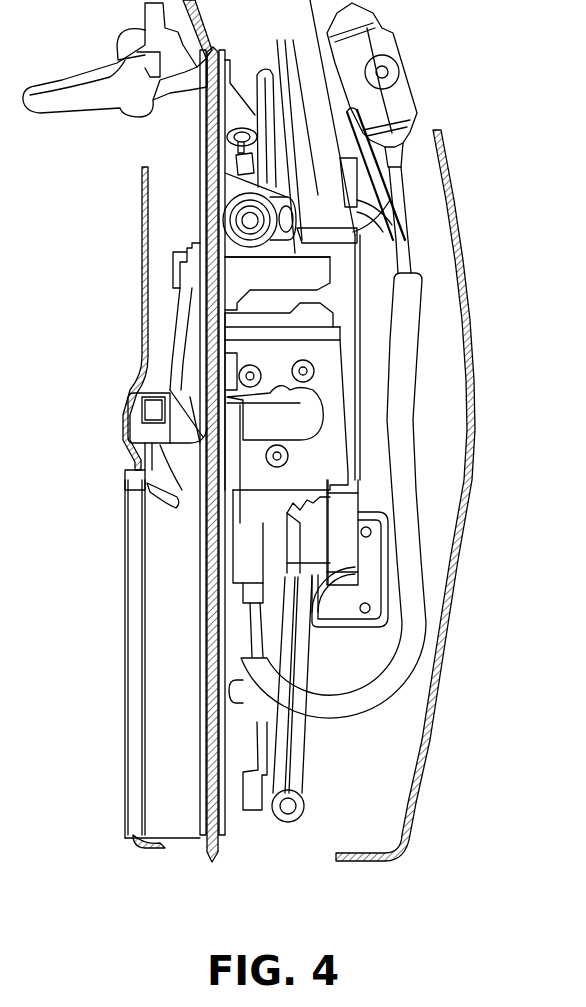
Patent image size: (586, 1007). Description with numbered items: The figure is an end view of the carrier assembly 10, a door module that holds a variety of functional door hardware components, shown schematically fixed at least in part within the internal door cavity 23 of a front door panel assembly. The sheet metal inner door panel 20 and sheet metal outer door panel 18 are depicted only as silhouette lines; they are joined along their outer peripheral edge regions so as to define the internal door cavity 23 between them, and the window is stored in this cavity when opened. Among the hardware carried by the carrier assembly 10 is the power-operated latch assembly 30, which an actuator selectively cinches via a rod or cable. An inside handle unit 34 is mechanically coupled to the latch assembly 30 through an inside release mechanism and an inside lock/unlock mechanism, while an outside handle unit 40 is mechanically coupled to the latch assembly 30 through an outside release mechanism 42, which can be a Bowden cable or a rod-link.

The inside handle unit 34 is at (80, 90).
The outside handle unit 40 is at (405, 88).
The carrier assembly 10 is at (417, 133).
The outside release mechanism 42 is at (404, 378).
The outer door panel 18 is at (442, 672).
The latch assembly 30 is at (232, 367).
The inner door panel 20 is at (152, 848).
The internal door cavity 23 is at (313, 805).